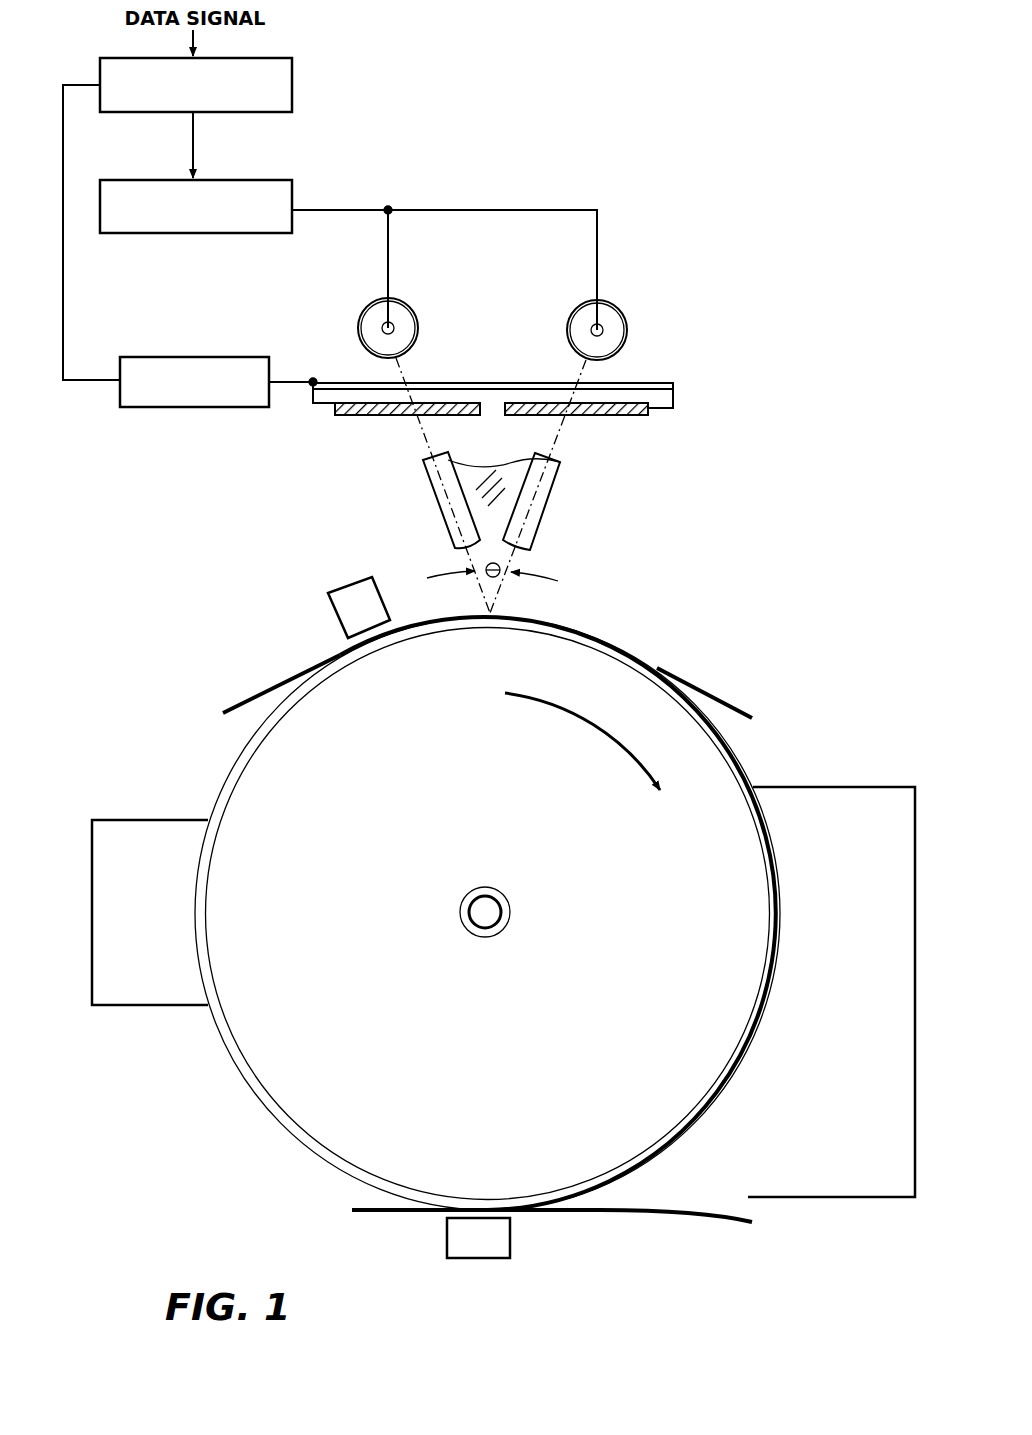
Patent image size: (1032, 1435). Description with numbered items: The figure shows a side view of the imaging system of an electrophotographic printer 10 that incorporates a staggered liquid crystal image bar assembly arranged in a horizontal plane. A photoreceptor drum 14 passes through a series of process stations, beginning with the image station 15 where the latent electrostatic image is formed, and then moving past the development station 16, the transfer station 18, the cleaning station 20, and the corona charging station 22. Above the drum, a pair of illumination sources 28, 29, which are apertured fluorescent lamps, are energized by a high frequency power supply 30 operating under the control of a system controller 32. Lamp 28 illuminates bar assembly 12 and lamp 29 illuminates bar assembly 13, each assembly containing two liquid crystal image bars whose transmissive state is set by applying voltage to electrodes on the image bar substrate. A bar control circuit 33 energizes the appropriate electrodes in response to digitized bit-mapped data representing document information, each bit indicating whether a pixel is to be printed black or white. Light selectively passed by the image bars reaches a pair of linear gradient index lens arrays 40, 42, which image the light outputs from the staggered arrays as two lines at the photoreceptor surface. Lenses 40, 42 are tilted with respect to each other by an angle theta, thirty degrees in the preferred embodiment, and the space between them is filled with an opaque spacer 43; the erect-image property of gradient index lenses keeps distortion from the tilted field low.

The electrophotographic printer 10 is at (687, 280).
The bar assembly 12 is at (360, 418).
The bar assembly 13 is at (620, 390).
The photoreceptor drum 14 is at (712, 727).
The image station 15 is at (513, 607).
The development station 16 is at (835, 810).
The transfer station 18 is at (498, 1237).
The cleaning station 20 is at (155, 820).
The corona charging station 22 is at (343, 603).
The illumination source 28 is at (362, 313).
The illumination source 29 is at (618, 307).
The high frequency power supply 30 is at (270, 190).
The system controller 32 is at (282, 80).
The bar control circuit 33 is at (147, 408).
The linear gradient index lens array 40 is at (433, 470).
The linear gradient index lens array 42 is at (553, 458).
The opaque spacer 43 is at (503, 493).